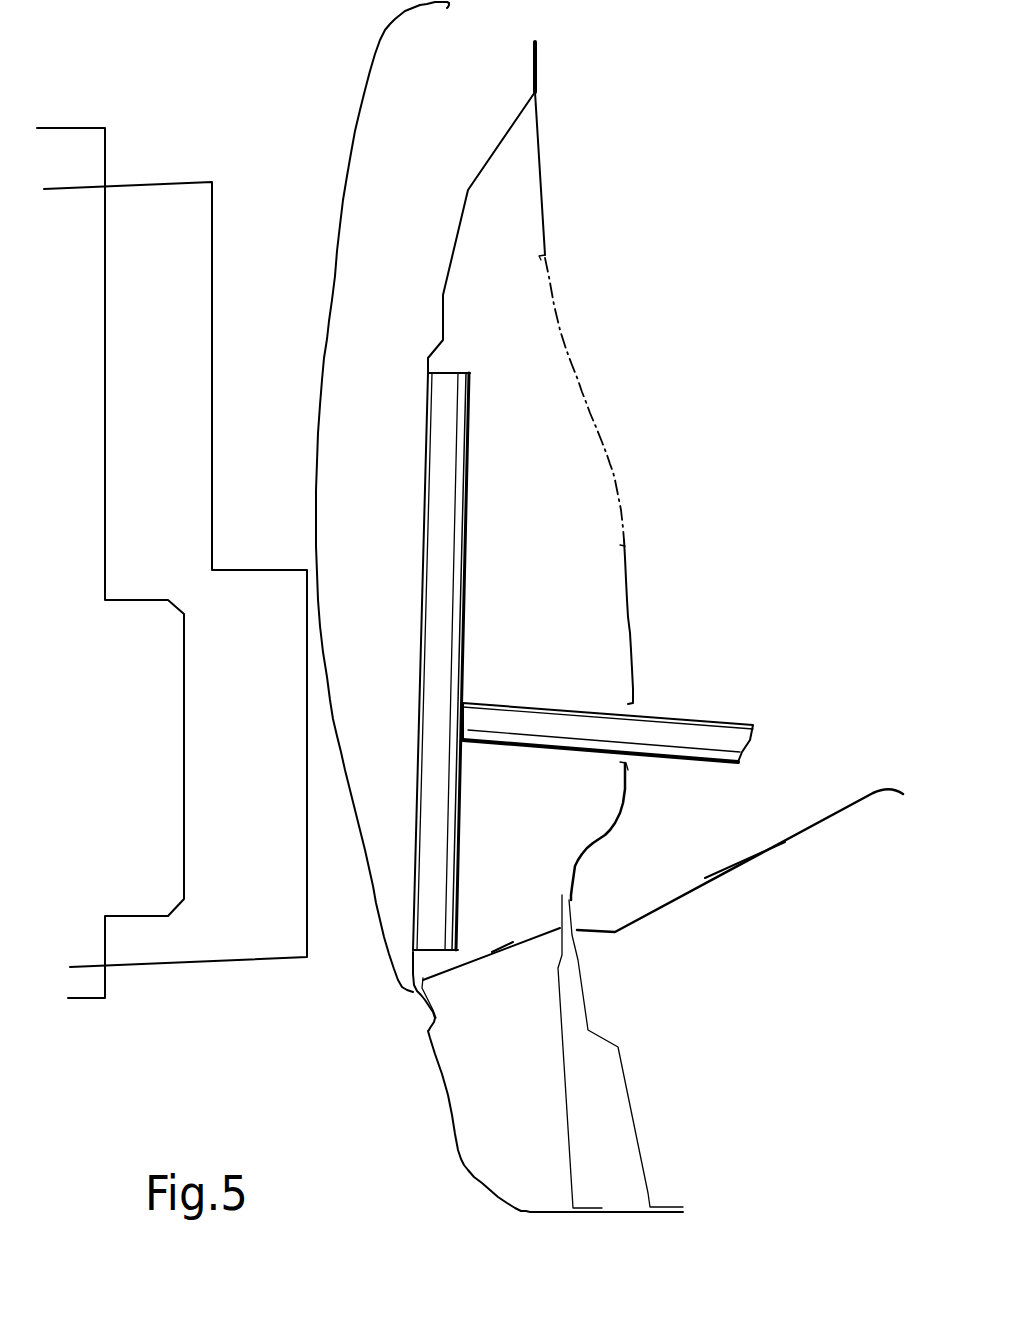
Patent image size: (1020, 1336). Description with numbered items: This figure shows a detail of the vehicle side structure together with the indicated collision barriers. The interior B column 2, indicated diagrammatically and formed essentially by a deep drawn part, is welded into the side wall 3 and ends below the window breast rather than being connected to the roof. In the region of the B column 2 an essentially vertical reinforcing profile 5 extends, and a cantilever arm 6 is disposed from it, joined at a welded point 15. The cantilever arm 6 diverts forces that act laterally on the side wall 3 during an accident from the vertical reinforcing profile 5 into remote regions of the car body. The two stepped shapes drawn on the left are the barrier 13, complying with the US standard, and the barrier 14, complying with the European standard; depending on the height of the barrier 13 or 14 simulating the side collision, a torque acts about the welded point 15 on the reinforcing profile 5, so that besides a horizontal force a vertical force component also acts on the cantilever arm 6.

The B column 2 is at (550, 421).
The side wall 3 is at (425, 165).
The reinforcing profile 5 is at (457, 487).
The cantilever arm 6 is at (673, 732).
The barrier 13 is at (79, 128).
The barrier 14 is at (179, 182).
The welded point 15 is at (480, 689).